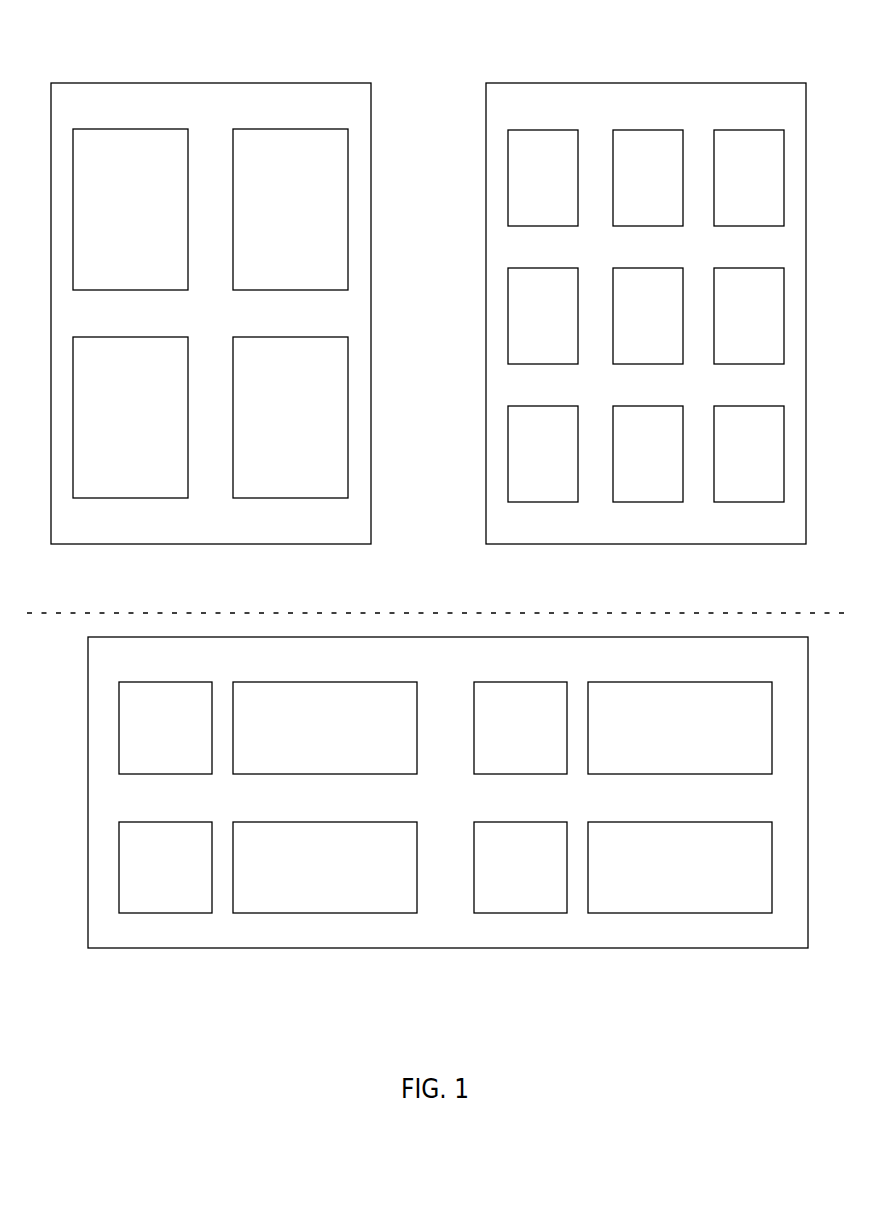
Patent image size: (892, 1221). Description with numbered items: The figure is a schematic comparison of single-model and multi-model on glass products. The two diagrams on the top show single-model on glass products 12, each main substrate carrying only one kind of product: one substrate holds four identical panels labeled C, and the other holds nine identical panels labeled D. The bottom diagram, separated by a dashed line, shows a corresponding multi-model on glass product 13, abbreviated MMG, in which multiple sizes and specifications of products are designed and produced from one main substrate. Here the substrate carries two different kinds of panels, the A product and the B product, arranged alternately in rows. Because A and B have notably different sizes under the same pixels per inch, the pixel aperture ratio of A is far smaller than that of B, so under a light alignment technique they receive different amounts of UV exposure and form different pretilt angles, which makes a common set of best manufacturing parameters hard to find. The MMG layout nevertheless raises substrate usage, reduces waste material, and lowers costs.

The single-model on glass products 12 is at (428, 272).
The multi-model on glass product 13 is at (448, 840).
The A product A is at (343, 797).
The B product B is at (502, 797).
The third sub-region C is at (210, 313).
The fourth sub-region D is at (646, 316).